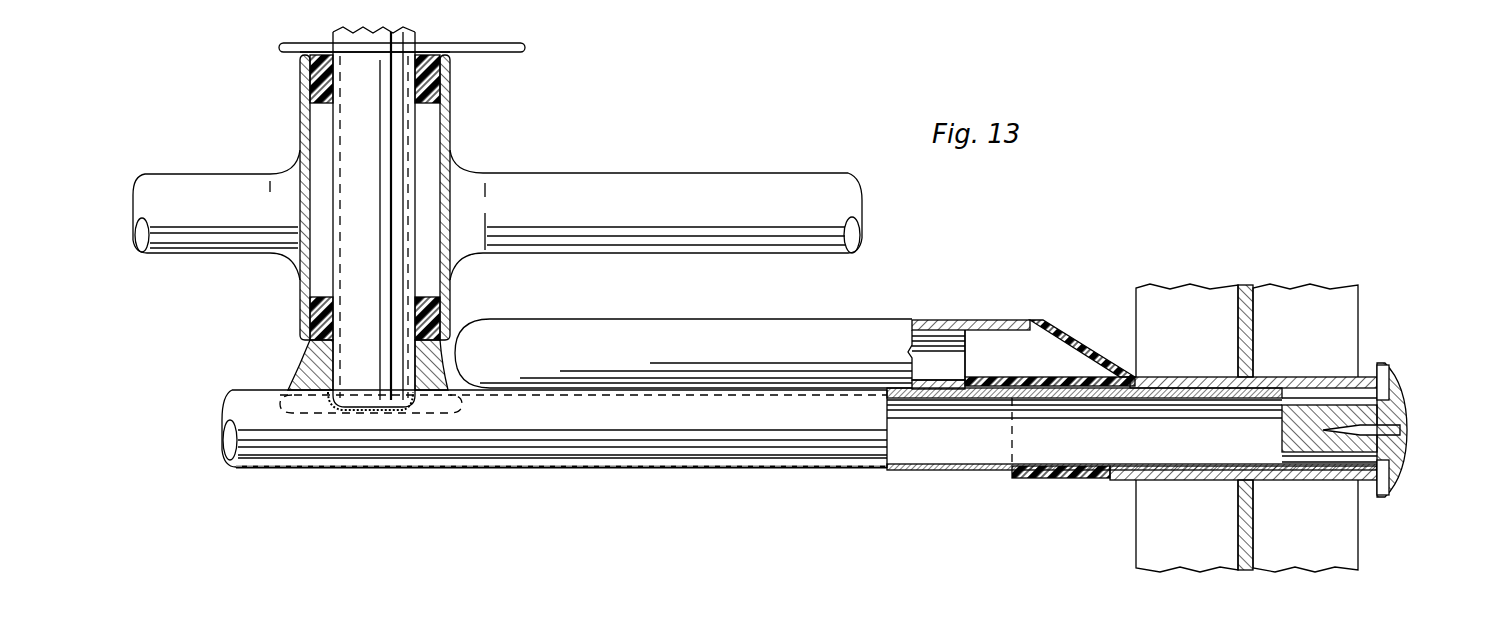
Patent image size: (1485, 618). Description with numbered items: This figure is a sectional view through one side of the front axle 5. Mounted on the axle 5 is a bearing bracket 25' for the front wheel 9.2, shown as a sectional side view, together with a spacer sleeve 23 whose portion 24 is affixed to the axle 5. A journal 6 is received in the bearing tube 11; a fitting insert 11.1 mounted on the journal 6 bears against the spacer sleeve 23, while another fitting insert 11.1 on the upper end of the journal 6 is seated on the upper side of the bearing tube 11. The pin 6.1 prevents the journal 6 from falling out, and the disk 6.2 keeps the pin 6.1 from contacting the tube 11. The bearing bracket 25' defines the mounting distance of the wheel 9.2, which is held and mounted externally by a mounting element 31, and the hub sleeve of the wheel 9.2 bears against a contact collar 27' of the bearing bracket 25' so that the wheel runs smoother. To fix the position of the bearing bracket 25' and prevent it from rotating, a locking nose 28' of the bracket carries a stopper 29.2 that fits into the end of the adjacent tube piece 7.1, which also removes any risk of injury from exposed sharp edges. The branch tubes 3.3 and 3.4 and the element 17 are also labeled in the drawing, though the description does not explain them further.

The journal 6 is at (374, 167).
The pin 6.1 is at (530, 47).
The disk 6.2 is at (295, 53).
The bearing tube 11 is at (450, 120).
The fitting insert 11.1 is at (450, 70).
The left branch tube 3.3 is at (205, 190).
The right branch tube 3.4 is at (676, 195).
The front axle 5 is at (235, 390).
The spacer sleeve 23 is at (437, 385).
The portion of the spacer sleeve 24 is at (322, 412).
The tube piece 7.1 is at (928, 320).
The locking nose 28' is at (1050, 318).
The stopper 29.2 is at (1042, 372).
The front wheel 9.2 is at (1247, 428).
The mounting element 31 is at (1395, 392).
The bearing bracket 25' is at (1060, 514).
The contact collar 27' is at (1230, 467).
The connection 17 is at (950, 617).